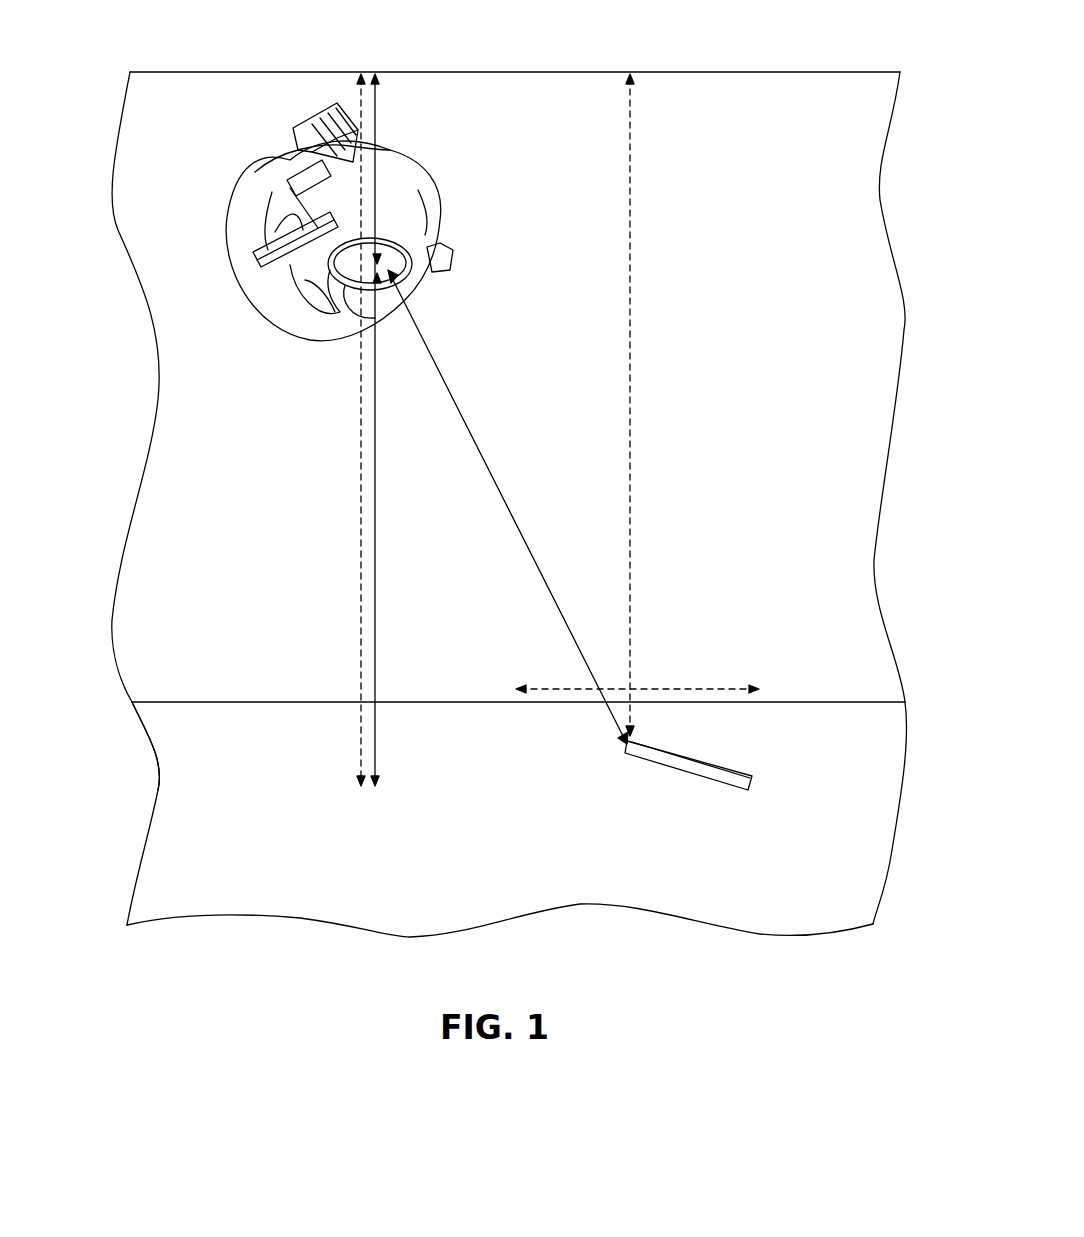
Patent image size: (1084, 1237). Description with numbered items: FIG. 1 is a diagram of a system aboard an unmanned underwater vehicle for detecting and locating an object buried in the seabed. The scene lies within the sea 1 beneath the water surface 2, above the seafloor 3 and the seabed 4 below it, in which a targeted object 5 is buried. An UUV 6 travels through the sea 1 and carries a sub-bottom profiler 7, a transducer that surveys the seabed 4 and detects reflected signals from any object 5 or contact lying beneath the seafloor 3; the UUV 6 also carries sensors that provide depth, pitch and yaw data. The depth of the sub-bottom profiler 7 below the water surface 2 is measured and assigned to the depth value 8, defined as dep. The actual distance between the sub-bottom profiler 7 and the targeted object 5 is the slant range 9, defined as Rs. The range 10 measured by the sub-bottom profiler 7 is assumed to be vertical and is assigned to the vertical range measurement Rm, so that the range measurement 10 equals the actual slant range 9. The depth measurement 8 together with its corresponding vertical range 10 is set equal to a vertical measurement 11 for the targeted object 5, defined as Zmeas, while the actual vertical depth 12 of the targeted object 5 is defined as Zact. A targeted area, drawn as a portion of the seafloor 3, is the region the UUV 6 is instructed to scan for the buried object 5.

The sea 1 is at (496, 504).
The water surface 2 is at (515, 52).
The seafloor 3 is at (518, 679).
The seabed 4 is at (125, 747).
The targeted object 5 is at (688, 788).
The unmanned underwater vehicle 6 is at (346, 222).
The sub-bottom profiler 7 is at (397, 257).
The depth value 8 is at (377, 116).
The slant range 9 is at (508, 507).
The vertical range 10 is at (416, 430).
The vertical measurement 11 is at (323, 430).
The actual vertical depth 12 is at (668, 405).